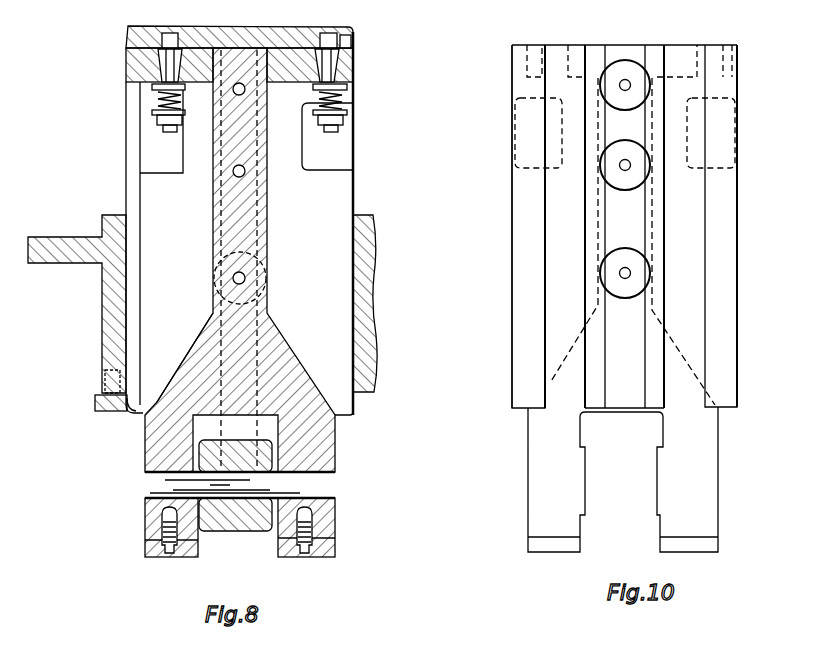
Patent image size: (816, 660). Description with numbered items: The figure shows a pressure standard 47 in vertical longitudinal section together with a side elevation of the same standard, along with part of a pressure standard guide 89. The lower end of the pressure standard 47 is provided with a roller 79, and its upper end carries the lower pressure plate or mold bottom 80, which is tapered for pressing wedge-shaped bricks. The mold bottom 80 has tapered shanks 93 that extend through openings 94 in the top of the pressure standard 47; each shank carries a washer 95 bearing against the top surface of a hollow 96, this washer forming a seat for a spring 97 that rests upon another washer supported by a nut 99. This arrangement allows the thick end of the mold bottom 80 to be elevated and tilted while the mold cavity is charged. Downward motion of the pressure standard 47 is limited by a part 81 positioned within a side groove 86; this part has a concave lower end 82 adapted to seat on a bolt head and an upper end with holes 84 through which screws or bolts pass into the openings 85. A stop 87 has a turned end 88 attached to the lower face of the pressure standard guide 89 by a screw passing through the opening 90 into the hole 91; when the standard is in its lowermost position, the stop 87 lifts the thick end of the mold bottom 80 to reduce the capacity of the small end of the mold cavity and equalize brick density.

In FIG. 8, the lower pressure plate 80 is at (306, 28).
In FIG. 8, the shank 93 is at (168, 67).
In FIG. 8, the opening 94 is at (156, 78).
In FIG. 8, the washer 95 is at (345, 91).
In FIG. 8, the spring 97 is at (343, 100).
In FIG. 8, the nut 99 is at (160, 120).
In FIG. 8, the stop 87 is at (126, 157).
In FIG. 8, the hollow 96 is at (180, 185).
In FIG. 10, the hollow 96 is at (527, 150).
In FIG. 8, the hole 84 is at (243, 94).
In FIG. 8, the pressure standard 47 is at (337, 196).
In FIG. 10, the pressure standard 47 is at (512, 403).
In FIG. 8, the part 81 is at (256, 247).
In FIG. 8, the concave lower end 82 is at (215, 312).
In FIG. 8, the pressure standard guide 89 is at (102, 328).
In FIG. 8, the hole 91 is at (103, 375).
In FIG. 8, the turned end 88 is at (103, 411).
In FIG. 8, the opening 90 is at (124, 413).
In FIG. 8, the roller 79 is at (228, 533).
In FIG. 10, the opening 85 is at (628, 273).
In FIG. 10, the side groove 86 is at (627, 353).